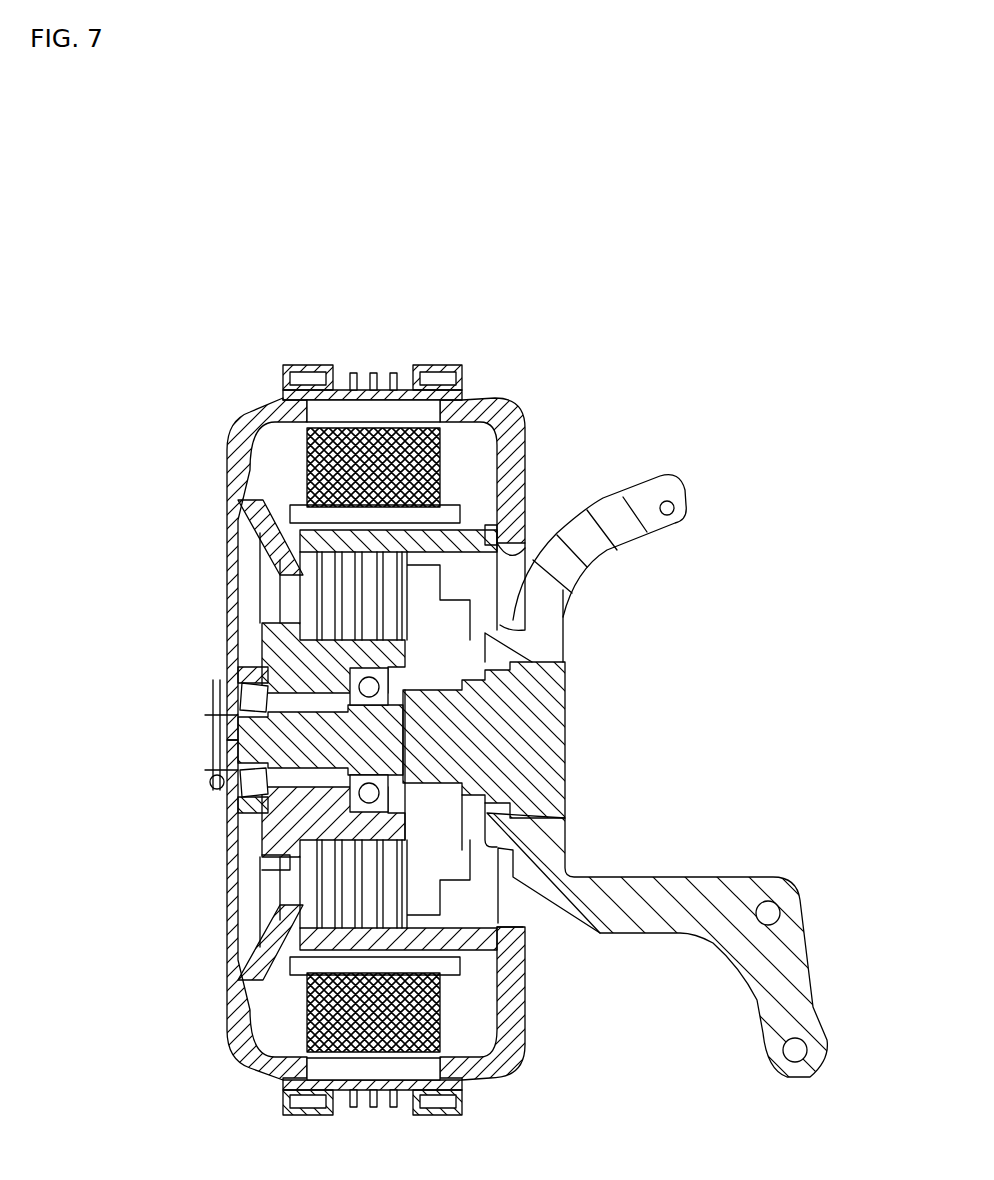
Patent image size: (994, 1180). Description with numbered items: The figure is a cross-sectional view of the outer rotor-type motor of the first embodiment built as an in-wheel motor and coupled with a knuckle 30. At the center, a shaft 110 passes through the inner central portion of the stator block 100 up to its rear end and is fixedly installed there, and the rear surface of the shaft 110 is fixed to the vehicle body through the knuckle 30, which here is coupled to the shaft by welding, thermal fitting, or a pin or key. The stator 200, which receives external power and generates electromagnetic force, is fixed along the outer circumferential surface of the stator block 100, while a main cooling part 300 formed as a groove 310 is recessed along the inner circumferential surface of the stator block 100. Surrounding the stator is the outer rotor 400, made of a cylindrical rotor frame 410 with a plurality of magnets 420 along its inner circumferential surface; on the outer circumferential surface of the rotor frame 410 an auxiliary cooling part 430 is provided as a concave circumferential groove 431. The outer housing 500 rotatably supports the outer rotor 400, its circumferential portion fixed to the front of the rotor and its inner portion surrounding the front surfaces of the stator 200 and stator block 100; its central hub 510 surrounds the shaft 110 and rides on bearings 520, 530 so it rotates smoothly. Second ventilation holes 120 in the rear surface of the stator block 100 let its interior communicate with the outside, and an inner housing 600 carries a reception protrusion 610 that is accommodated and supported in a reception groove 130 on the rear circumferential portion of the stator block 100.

The knuckle 30 is at (580, 893).
The stator block 100 is at (463, 657).
The shaft 110 is at (267, 815).
The second ventilation holes 120 is at (442, 623).
The reception groove 130 is at (500, 540).
The stator 200 is at (442, 455).
The main cooling part 300 is at (330, 558).
The groove 310 is at (337, 540).
The outer rotor 400 is at (429, 627).
The rotor frame 410 is at (317, 362).
The magnets 420 is at (422, 386).
The auxiliary cooling part 430 is at (394, 372).
The groove 431 is at (363, 380).
The outer housing 500 is at (226, 457).
The hub 510 is at (290, 863).
The bearing 520 is at (240, 782).
The bearing 530 is at (523, 933).
The inner housing 600 is at (524, 1004).
The reception protrusion 610 is at (518, 513).